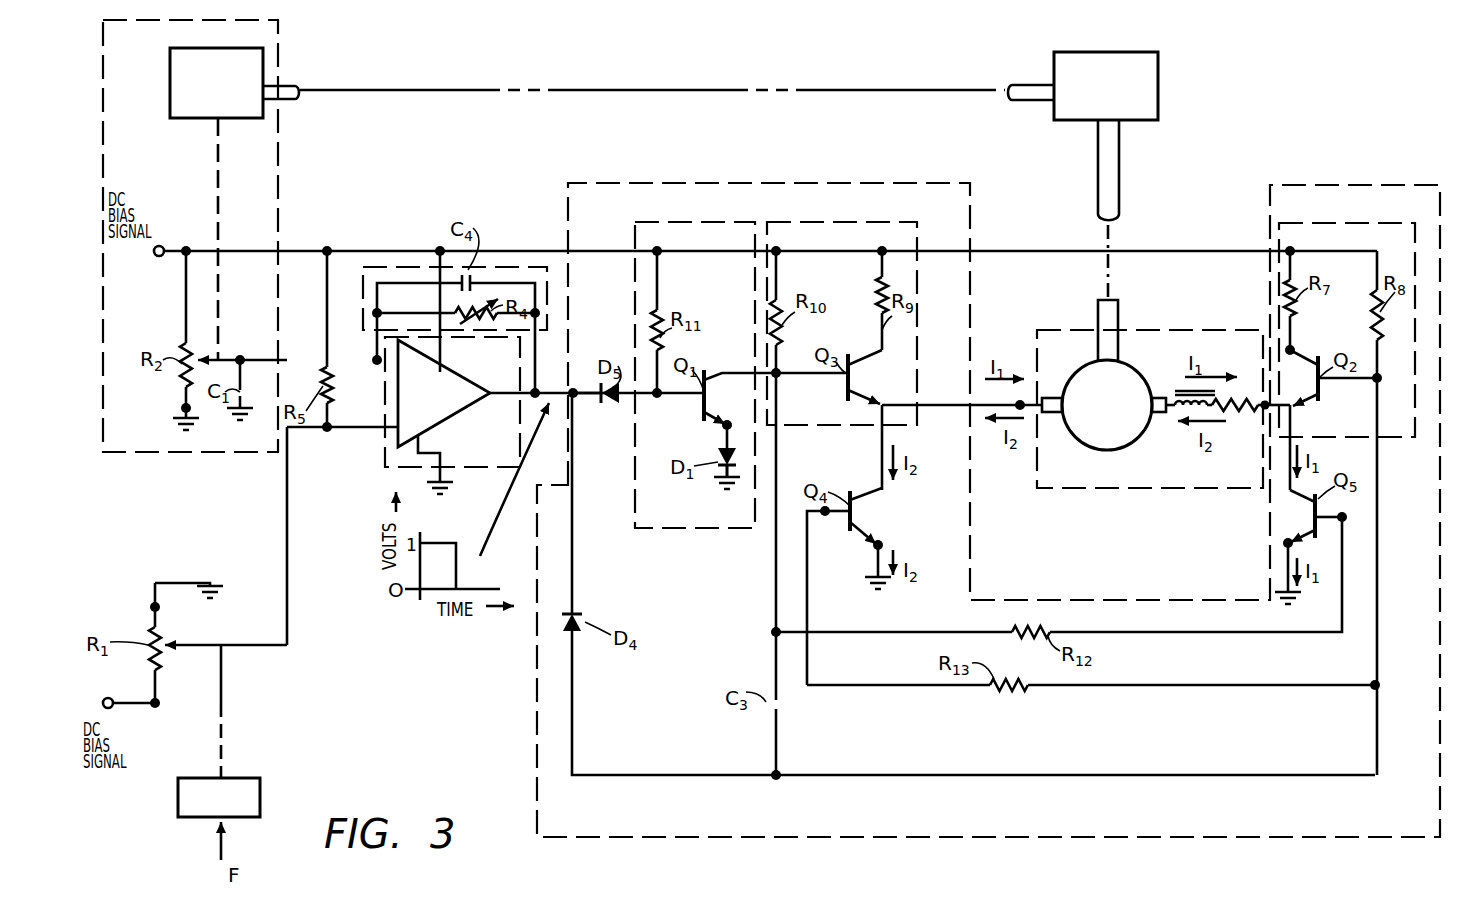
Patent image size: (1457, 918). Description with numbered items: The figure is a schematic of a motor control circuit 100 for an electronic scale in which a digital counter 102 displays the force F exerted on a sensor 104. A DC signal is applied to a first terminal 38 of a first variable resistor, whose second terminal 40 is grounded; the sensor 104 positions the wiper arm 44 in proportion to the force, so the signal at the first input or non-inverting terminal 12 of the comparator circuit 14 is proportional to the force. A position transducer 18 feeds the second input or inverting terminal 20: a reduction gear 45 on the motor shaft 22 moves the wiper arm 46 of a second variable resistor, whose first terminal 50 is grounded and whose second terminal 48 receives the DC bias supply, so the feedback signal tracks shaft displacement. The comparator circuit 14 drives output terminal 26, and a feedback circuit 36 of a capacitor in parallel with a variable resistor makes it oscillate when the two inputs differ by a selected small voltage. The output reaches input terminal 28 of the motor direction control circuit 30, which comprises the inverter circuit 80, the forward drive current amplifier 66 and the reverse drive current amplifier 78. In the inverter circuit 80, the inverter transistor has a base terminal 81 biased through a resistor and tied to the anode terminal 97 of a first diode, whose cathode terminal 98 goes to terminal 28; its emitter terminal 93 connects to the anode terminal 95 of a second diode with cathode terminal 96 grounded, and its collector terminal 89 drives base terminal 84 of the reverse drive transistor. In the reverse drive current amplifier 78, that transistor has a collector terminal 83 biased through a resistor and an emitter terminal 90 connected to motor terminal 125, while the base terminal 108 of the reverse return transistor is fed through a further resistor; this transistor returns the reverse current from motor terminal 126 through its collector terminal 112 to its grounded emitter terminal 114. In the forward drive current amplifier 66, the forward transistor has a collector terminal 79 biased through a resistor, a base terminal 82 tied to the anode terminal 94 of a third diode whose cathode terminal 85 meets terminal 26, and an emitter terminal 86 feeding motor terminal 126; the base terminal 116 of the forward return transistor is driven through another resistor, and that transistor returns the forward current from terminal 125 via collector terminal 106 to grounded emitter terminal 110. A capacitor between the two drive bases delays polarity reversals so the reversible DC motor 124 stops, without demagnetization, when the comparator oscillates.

The first input or non-inverting terminal 12 is at (327, 432).
The comparator circuit 14 is at (380, 470).
The position transducer 18 is at (286, 168).
The second input or inverting terminal 20 is at (377, 364).
The motor shaft 22 is at (1123, 316).
The comparator output terminal 26 is at (538, 390).
The motor direction control circuit input terminal 28 is at (574, 388).
The motor direction control circuit 30 is at (720, 185).
The feedback circuit 36 is at (491, 266).
The first terminal 38 is at (110, 698).
The second terminal 40 is at (152, 606).
The wiper arm 44 is at (192, 645).
The reduction gear 45 is at (170, 76).
The wiper arm 46 is at (227, 358).
The second terminal 48 is at (161, 258).
The first terminal 50 is at (184, 408).
The forward drive current amplifier 66 is at (1381, 222).
The reverse drive current amplifier 78 is at (858, 222).
The collector terminal 79 is at (1293, 350).
The inverter circuit 80 is at (741, 530).
The base terminal 81 is at (657, 398).
The base terminal 82 is at (1346, 380).
The collector terminal 83 is at (870, 358).
The base terminal 84 is at (800, 373).
The cathode terminal 85 is at (572, 612).
The emitter terminal 86 is at (1292, 407).
The collector terminal 89 is at (730, 373).
The emitter terminal 90 is at (882, 403).
The emitter terminal 93 is at (729, 423).
The anode terminal 94 is at (580, 631).
The anode terminal 95 is at (724, 455).
The cathode terminal 96 is at (726, 479).
The anode terminal 97 is at (614, 402).
The cathode terminal 98 is at (603, 398).
The motor control circuit 100 is at (1210, 87).
The digital counter 102 is at (1099, 52).
The sensor 104 is at (244, 778).
The collector terminal 106 is at (874, 495).
The base terminal 108 is at (1346, 518).
The emitter terminal 110 is at (881, 541).
The collector terminal 112 is at (1312, 501).
The emitter terminal 114 is at (1285, 545).
The base terminal 116 is at (826, 516).
The motor 124 is at (1155, 490).
The motor terminal 125 is at (1020, 402).
The motor terminal 126 is at (1265, 410).